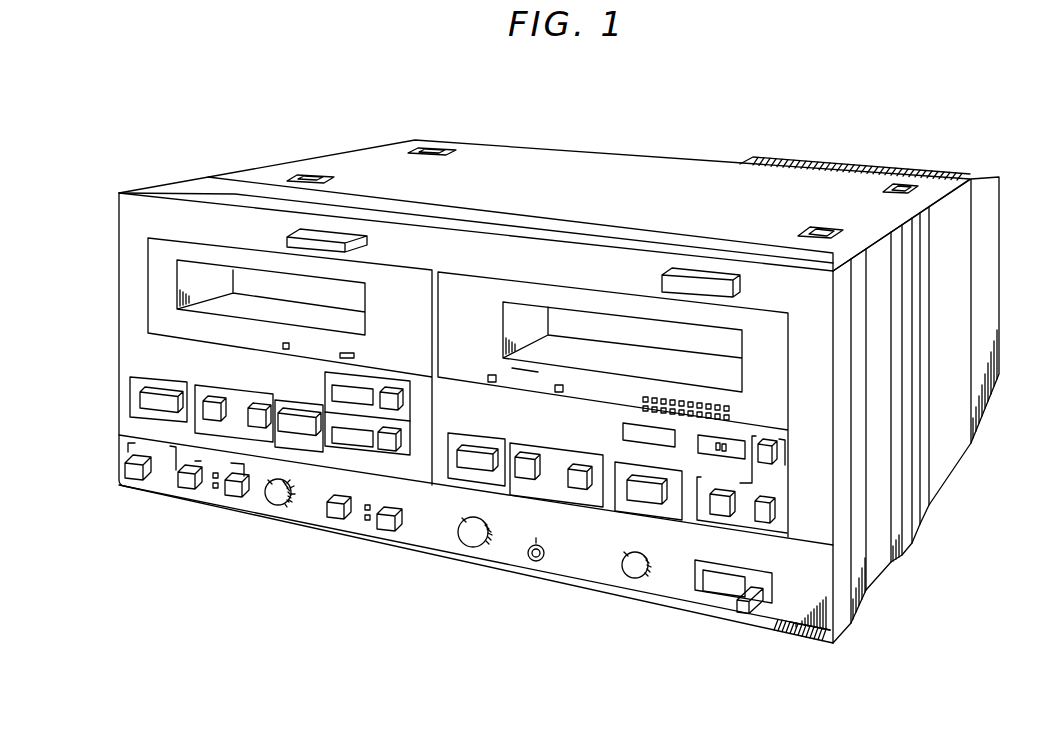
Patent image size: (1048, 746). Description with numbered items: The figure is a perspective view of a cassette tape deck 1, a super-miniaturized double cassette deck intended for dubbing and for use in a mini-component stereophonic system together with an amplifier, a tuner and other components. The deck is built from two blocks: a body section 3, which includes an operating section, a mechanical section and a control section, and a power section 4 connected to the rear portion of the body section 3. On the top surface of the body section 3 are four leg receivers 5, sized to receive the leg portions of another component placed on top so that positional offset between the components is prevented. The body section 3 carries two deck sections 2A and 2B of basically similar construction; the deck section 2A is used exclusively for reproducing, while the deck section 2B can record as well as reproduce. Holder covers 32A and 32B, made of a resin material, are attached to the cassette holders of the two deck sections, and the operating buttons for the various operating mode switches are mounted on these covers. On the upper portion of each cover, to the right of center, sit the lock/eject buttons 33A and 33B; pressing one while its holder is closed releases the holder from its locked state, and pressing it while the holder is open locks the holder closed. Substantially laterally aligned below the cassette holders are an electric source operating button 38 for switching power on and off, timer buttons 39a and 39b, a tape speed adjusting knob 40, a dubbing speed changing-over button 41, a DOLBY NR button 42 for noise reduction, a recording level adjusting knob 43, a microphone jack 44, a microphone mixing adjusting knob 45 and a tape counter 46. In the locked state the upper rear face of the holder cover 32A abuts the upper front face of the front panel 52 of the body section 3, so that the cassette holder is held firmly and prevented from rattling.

The cassette tape deck 1 is at (927, 125).
The deck section 2A is at (273, 450).
The deck section 2B is at (607, 508).
The body section 3 is at (338, 157).
The power section 4 is at (990, 178).
The leg receivers 5 is at (296, 178).
The holder cover 32A is at (128, 336).
The holder cover 32B is at (823, 467).
The lock/eject button 33A is at (290, 236).
The lock/eject button 33B is at (683, 268).
The electric source operating button 38 is at (132, 474).
The timer button 39a is at (184, 487).
The timer button 39b is at (229, 496).
The tape speed adjusting knob 40 is at (274, 503).
The dubbing speed changing-over button 41 is at (331, 521).
The DOLBY NR button 42 is at (387, 528).
The recording level adjusting knob 43 is at (470, 540).
The microphone jack 44 is at (537, 563).
The microphone mixing adjusting knob 45 is at (632, 578).
The tape counter 46 is at (718, 595).
The front panel 52 is at (843, 621).